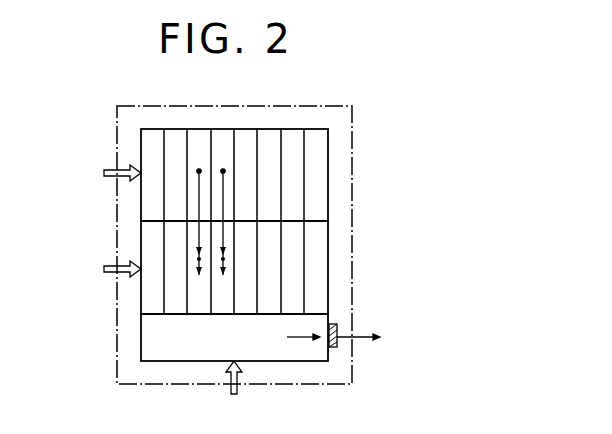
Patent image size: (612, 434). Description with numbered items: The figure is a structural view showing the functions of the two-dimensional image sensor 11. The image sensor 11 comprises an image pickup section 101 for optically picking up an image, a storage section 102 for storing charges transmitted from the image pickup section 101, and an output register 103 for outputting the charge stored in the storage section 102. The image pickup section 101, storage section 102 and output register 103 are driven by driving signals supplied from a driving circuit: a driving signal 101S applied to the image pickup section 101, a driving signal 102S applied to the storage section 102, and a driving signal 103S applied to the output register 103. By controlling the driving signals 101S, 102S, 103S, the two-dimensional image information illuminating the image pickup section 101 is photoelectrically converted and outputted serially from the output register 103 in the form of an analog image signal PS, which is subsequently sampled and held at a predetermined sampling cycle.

The two-dimensional image sensor 11 is at (352, 185).
The image pickup section 101 is at (141, 148).
The driving signal 101S is at (93, 173).
The storage section 102 is at (141, 297).
The driving signal 102S is at (90, 268).
The output register 103 is at (312, 361).
The driving signal 103S is at (239, 394).
The analog image signal PS is at (351, 337).